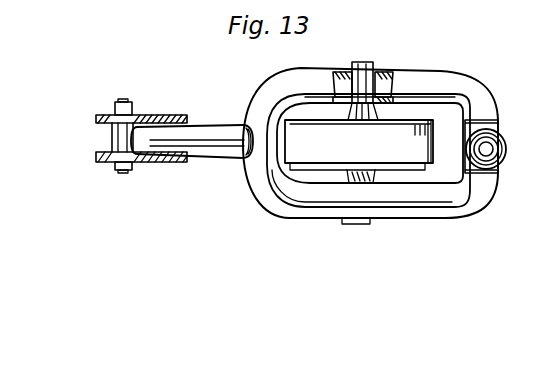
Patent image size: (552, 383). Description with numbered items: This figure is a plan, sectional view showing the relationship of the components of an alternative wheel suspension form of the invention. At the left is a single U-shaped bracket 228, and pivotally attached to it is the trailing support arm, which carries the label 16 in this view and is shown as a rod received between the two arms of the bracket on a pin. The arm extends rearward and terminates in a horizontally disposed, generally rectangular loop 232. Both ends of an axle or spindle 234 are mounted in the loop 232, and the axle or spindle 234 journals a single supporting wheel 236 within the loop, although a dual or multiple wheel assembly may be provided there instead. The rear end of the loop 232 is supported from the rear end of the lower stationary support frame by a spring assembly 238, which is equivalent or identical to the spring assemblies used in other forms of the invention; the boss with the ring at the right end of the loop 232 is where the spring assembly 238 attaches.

The operating rod / shaft 16 is at (243, 176).
The U-shaped bracket 228 is at (162, 115).
The loop 232 is at (370, 135).
The axle or spindle 234 is at (368, 83).
The supporting wheel 236 is at (359, 151).
The spring assembly 238 is at (500, 137).